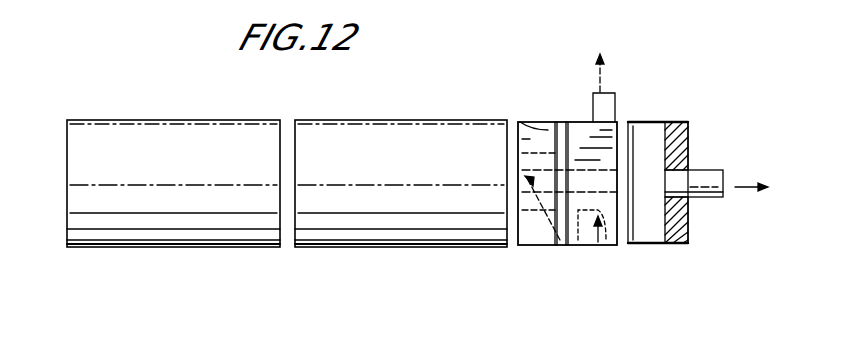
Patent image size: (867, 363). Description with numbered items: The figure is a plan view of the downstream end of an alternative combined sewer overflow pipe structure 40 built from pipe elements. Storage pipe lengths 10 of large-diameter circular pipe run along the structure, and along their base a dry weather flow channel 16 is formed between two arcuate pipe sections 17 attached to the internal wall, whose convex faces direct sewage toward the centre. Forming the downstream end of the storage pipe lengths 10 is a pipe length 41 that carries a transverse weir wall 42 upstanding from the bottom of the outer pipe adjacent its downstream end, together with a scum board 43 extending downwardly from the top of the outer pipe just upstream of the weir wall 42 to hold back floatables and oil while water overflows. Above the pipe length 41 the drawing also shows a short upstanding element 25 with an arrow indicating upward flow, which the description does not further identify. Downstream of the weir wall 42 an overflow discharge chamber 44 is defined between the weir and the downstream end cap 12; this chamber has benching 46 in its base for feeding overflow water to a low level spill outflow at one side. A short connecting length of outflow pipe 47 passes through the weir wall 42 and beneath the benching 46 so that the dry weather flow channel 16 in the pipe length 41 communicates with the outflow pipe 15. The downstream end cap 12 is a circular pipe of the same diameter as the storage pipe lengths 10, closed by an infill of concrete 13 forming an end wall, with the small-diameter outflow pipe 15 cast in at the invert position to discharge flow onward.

The storage pipe 10 is at (130, 118).
The combined sewer overflow pipe structure 40 is at (182, 112).
The pipe length 41 is at (537, 120).
The weir wall 42 is at (557, 120).
The scum board 43 is at (520, 122).
The arcuate pipe sections 17 is at (525, 139).
The dry weather flow channel 16 is at (567, 248).
The vent port 25 is at (616, 103).
The overflow discharge chamber 44 is at (600, 247).
The benching 46 is at (622, 247).
The connecting length of outflow pipe 47 is at (568, 247).
The downstream end cap 12 is at (645, 118).
The concrete infill 13 is at (685, 135).
The outflow pipe 15 is at (698, 204).